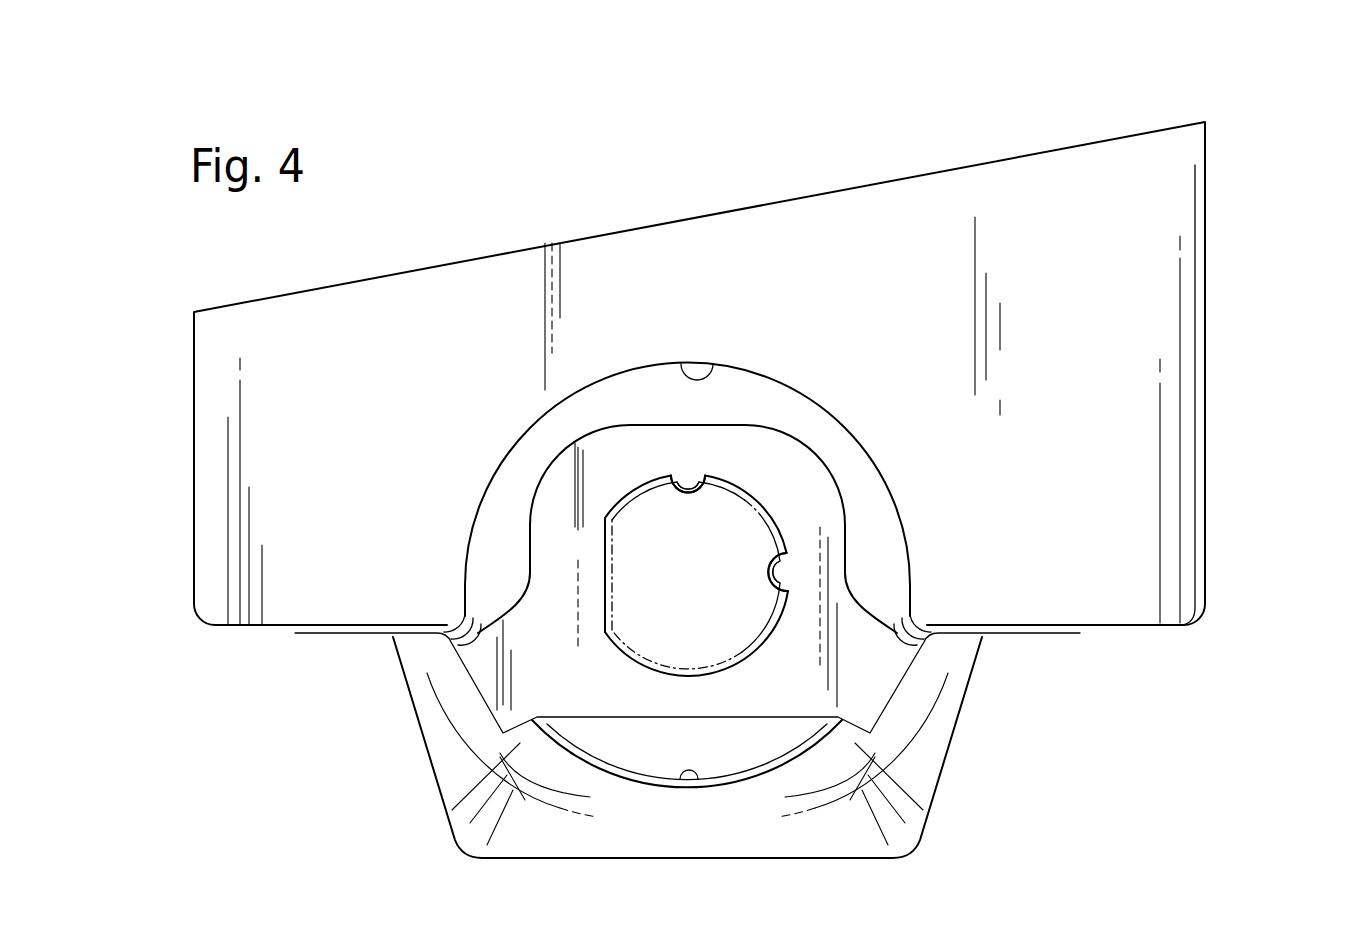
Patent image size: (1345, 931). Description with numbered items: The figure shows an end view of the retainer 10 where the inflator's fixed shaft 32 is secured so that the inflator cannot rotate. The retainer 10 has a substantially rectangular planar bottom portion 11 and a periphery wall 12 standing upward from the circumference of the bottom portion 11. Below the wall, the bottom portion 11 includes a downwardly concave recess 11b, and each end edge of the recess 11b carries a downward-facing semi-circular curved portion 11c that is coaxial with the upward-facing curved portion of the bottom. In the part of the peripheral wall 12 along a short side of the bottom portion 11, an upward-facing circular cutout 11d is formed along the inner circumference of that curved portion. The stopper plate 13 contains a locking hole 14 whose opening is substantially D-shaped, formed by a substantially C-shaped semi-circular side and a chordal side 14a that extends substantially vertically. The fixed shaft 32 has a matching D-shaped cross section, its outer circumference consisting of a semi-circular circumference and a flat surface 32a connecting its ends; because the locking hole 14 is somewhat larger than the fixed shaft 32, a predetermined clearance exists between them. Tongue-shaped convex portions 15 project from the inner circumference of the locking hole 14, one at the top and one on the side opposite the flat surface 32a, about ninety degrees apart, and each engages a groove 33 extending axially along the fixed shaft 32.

The retainer 10 is at (1141, 84).
The bottom portion 11 is at (1137, 628).
The recess 11b is at (933, 790).
The downward-facing semi-circular curved portion 11c is at (680, 779).
The upward-facing circular cutout 11d is at (712, 365).
The periphery wall 12 is at (846, 213).
The stopper plate 13 is at (818, 493).
The locking hole 14 is at (753, 503).
The chordal side 14a is at (604, 596).
The convex portion 15 is at (690, 480).
The fixed shaft 32 is at (662, 628).
The flat surface 32a is at (613, 587).
The groove 33 is at (693, 495).